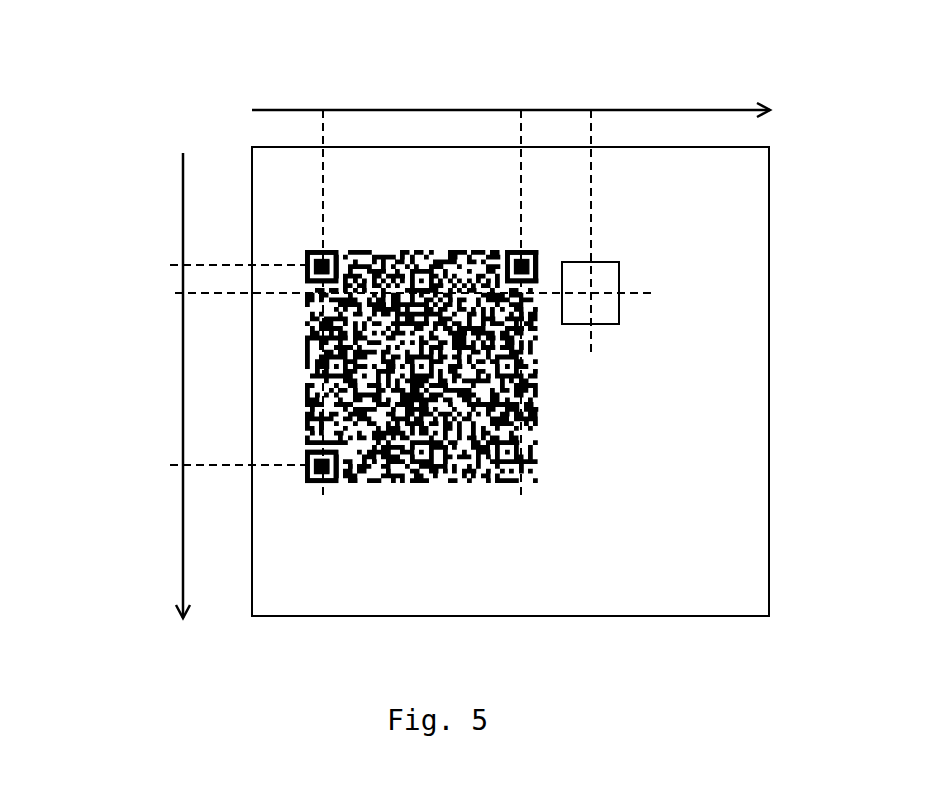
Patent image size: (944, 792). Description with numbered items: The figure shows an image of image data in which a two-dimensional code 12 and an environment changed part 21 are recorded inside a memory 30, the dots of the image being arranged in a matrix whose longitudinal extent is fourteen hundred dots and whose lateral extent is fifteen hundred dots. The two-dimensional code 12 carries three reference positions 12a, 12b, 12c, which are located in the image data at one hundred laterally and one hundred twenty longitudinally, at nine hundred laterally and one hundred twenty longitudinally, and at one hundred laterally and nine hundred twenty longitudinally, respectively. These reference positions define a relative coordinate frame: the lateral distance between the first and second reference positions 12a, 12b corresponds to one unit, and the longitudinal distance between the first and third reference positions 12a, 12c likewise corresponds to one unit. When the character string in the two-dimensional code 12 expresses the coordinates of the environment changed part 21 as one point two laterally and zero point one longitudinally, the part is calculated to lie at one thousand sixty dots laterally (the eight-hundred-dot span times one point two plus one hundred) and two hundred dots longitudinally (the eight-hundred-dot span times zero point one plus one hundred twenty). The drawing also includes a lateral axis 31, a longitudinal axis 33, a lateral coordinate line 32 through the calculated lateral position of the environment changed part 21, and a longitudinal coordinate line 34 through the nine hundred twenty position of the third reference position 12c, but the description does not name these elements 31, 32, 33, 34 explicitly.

The two-dimensional code 12 is at (415, 250).
The reference position 12a is at (330, 250).
The reference position 12b is at (538, 252).
The reference position 12c is at (335, 480).
The environment changed part 21 is at (620, 280).
The memory 30 is at (752, 327).
The horizontal coordinate axis (x axis) 31 is at (647, 120).
The x coordinate line of reference region (1060) 32 is at (583, 70).
The vertical coordinate axis (y axis) 33 is at (200, 318).
The y coordinate line of position detection pattern (920) 34 is at (132, 478).